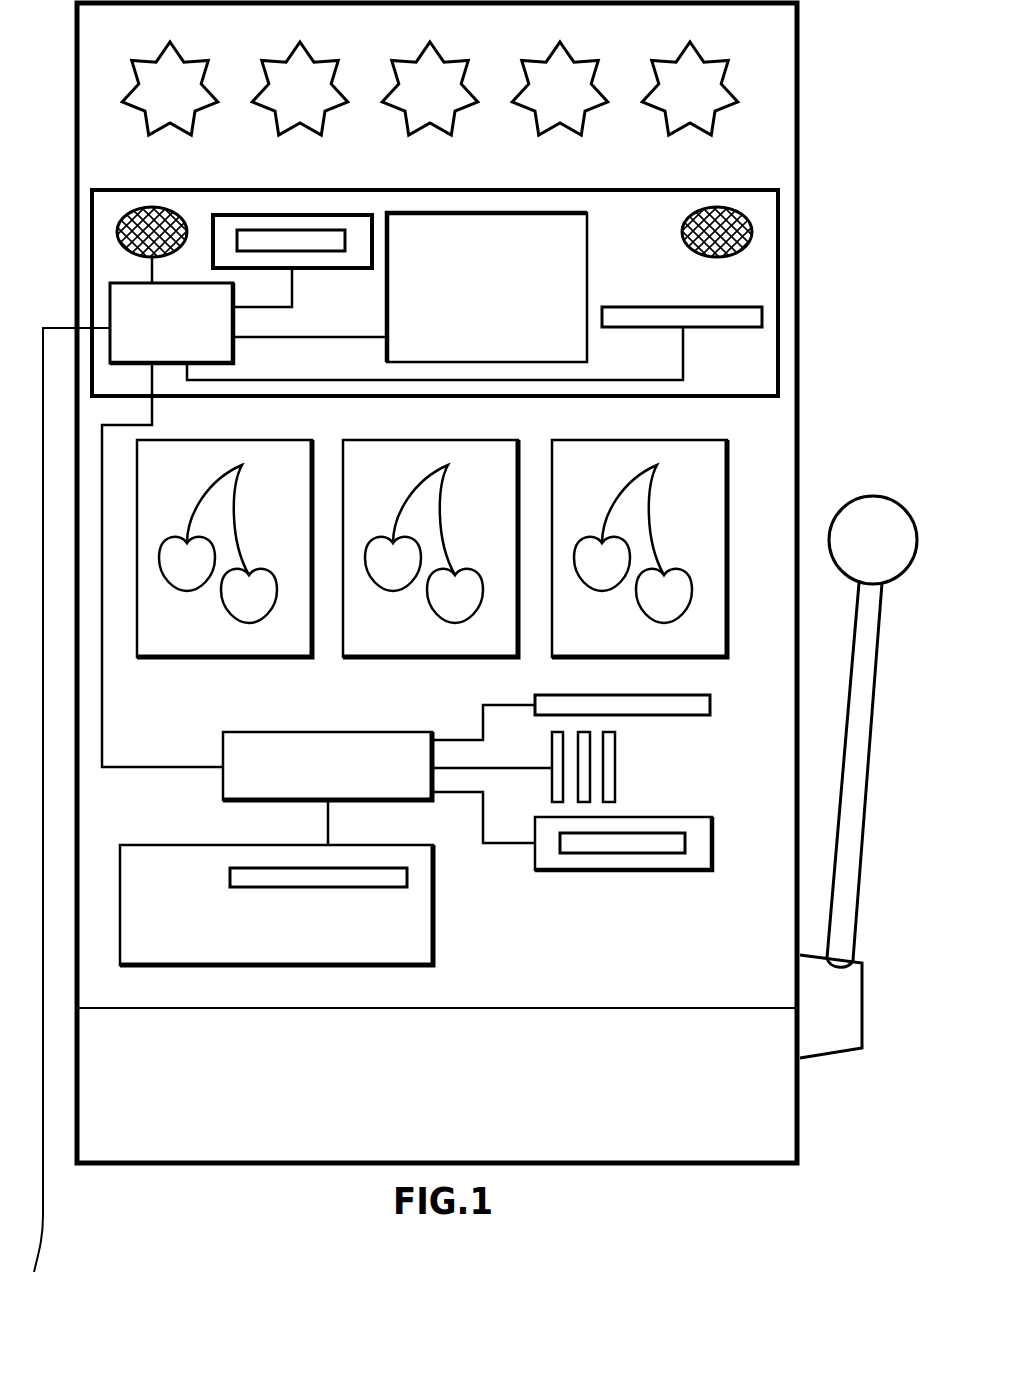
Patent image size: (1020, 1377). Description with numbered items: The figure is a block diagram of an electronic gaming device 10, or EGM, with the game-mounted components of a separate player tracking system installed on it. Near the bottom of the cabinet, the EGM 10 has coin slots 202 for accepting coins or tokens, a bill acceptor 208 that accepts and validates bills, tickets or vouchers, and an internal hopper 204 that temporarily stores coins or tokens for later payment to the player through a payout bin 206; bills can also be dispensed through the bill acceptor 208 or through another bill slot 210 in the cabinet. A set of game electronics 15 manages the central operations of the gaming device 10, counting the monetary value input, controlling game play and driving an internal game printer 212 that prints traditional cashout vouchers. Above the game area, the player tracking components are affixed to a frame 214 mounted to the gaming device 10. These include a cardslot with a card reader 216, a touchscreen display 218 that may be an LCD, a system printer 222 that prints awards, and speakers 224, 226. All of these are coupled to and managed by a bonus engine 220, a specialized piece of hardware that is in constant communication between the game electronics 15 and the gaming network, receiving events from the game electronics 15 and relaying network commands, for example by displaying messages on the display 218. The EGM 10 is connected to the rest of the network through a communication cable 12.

The electronic gaming device 10 is at (797, 80).
The communication cable 12 is at (43, 1200).
The game electronics 15 is at (367, 732).
The coin slots 202 is at (615, 765).
The internal hopper 204 is at (433, 920).
The payout bin 206 is at (465, 1093).
The bill acceptor 208 is at (657, 715).
The bill slot 210 is at (230, 878).
The game printer 212 is at (625, 870).
The frame 214 is at (778, 300).
The card reader 216 is at (723, 327).
The touchscreen display 218 is at (587, 265).
The bonus engine 220 is at (170, 363).
The system printer 222 is at (243, 215).
The speakers 224 is at (125, 212).
The speakers 226 is at (745, 210).